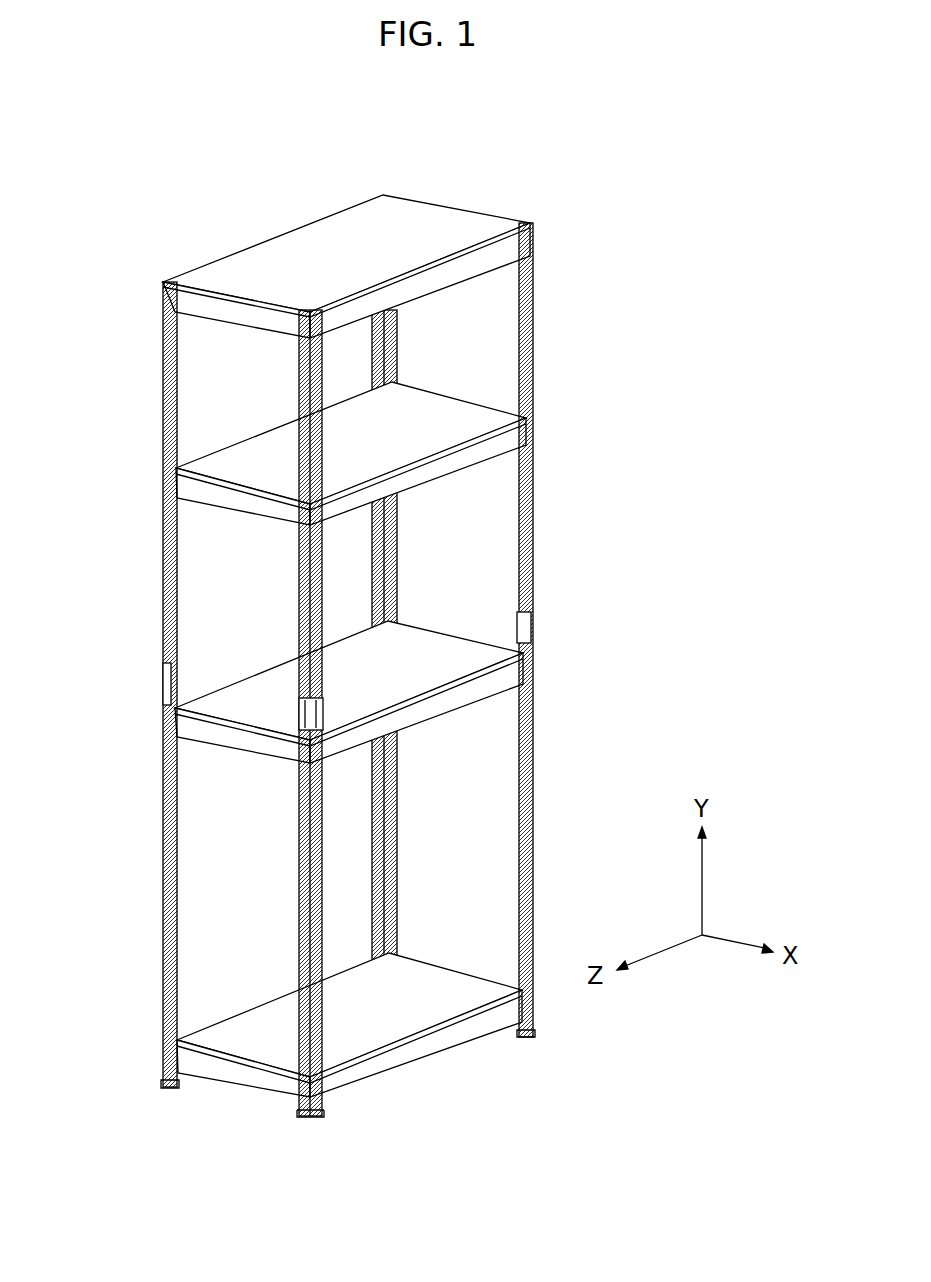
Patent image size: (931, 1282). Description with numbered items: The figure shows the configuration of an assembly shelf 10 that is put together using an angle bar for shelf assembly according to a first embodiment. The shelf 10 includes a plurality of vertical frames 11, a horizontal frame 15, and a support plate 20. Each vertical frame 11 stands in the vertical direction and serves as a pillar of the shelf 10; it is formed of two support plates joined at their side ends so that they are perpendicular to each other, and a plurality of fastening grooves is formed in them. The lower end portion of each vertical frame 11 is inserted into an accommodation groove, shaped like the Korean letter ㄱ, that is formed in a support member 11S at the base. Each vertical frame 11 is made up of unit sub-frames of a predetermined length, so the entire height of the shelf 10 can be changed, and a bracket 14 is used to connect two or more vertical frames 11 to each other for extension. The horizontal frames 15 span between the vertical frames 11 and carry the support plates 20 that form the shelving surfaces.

The shelf 10 is at (598, 200).
The vertical frame 11 is at (162, 512).
The support member 11S is at (170, 1087).
The bracket 14 is at (165, 683).
The horizontal frame 15 is at (234, 503).
The support plate 20 is at (425, 405).